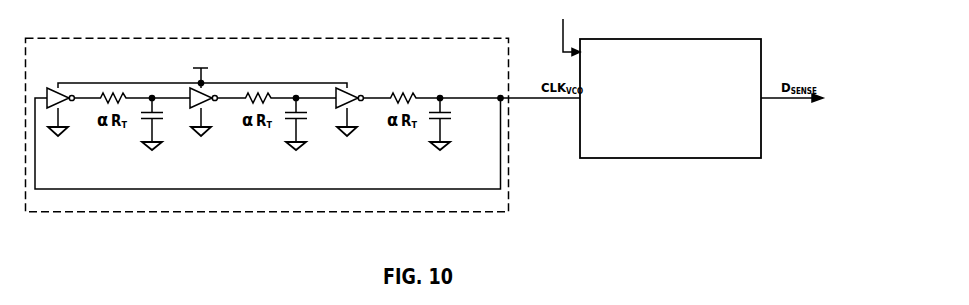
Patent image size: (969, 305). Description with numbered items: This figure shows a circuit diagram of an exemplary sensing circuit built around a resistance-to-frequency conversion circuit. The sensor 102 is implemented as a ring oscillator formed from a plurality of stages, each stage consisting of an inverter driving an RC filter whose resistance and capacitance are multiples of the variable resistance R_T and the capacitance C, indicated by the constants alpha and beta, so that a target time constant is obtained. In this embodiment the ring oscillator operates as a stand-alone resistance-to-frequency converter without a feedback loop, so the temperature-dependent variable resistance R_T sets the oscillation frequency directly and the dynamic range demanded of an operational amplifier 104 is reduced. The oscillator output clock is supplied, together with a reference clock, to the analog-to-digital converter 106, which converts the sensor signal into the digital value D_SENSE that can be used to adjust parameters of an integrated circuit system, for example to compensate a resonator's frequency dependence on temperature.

The sensor 102 is at (57, 62).
The operational amplifier 104 is at (562, 30).
The analog-to-digital converter 106 is at (684, 121).